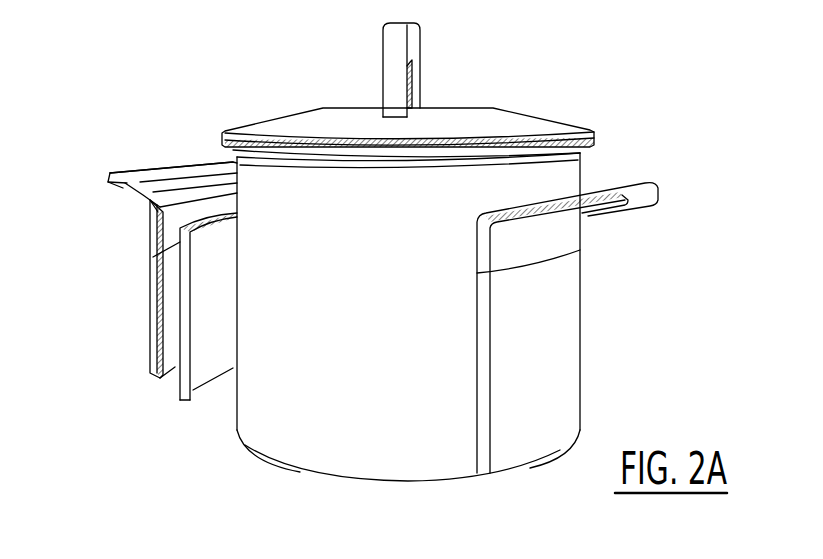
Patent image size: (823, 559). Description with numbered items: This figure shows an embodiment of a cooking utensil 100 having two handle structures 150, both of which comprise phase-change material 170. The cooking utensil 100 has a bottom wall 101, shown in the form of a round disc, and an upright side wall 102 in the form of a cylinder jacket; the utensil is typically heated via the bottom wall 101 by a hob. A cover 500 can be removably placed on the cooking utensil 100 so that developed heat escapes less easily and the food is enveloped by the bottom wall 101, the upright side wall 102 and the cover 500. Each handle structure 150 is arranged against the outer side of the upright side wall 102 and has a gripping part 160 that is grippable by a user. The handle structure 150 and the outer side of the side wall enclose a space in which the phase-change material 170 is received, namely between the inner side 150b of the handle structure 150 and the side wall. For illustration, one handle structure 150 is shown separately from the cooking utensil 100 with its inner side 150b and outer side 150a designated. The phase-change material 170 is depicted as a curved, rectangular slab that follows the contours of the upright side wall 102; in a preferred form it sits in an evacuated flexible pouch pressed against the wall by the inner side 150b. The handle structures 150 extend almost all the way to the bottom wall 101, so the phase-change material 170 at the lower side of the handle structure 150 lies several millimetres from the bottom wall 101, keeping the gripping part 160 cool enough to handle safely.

The cooking utensil 100 is at (690, 338).
The bottom wall 101 is at (475, 507).
The upright side wall 102 is at (310, 185).
The handle structure 150 is at (645, 283).
The outer side of handle structure 150a is at (117, 300).
The inner side of handle structure 150b is at (170, 312).
The gripping part 160 is at (127, 182).
The phase-change material 170 is at (203, 360).
The cover 500 is at (560, 75).